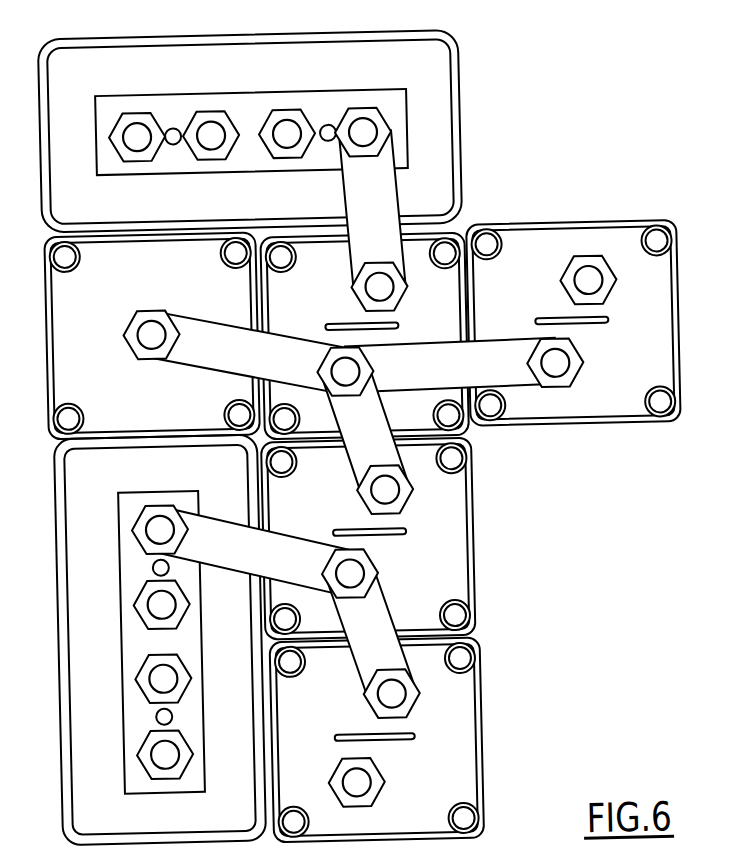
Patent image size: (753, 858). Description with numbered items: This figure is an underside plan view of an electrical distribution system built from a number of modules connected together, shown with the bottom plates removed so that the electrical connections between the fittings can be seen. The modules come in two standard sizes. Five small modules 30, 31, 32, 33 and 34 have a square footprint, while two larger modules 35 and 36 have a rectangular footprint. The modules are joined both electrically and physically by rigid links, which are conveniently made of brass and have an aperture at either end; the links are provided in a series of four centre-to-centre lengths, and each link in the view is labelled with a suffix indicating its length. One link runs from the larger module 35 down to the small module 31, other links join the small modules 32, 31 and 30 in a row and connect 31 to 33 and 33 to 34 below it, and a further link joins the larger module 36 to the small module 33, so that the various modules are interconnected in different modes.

The small module 30 is at (573, 323).
The small module 31 is at (364, 336).
The small module 32 is at (152, 336).
The small module 33 is at (368, 539).
The small module 34 is at (377, 740).
The larger module 35 is at (250, 131).
The larger module 36 is at (160, 640).